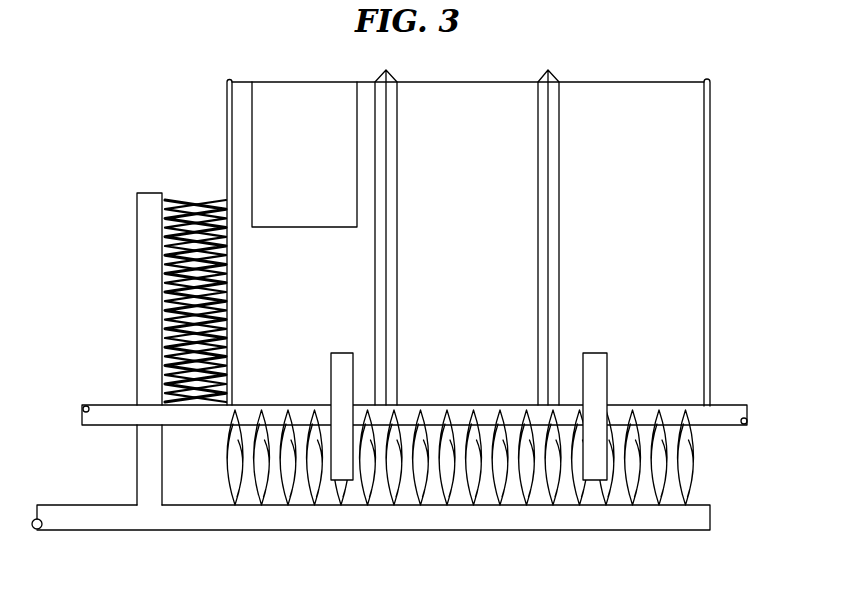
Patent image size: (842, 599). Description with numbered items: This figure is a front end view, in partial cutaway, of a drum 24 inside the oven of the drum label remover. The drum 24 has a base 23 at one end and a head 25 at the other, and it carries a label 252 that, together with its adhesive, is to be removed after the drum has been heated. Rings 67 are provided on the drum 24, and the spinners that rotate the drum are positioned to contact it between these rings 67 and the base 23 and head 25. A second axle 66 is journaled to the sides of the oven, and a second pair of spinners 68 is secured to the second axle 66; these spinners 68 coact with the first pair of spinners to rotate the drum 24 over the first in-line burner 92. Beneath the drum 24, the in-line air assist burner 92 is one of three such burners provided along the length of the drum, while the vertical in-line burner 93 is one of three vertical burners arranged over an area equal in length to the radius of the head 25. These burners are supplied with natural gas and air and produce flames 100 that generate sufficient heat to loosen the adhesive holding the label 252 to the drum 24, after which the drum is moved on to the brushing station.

The drum 24 is at (661, 49).
The head 25 is at (227, 130).
The base 23 is at (710, 196).
The label 252 is at (283, 100).
The rings 67 is at (545, 72).
The second pair of spinners 68 is at (598, 370).
The vertical in-line burner 93 is at (140, 237).
The second axle 66 is at (732, 408).
The in-line air assist burner 92 is at (363, 522).
The flames 100 is at (220, 467).